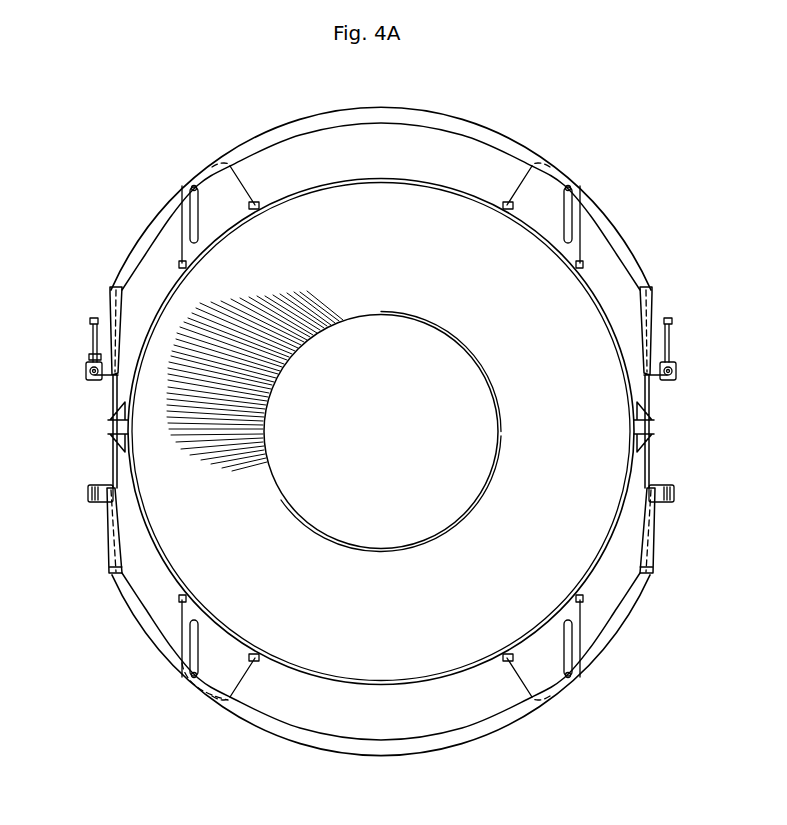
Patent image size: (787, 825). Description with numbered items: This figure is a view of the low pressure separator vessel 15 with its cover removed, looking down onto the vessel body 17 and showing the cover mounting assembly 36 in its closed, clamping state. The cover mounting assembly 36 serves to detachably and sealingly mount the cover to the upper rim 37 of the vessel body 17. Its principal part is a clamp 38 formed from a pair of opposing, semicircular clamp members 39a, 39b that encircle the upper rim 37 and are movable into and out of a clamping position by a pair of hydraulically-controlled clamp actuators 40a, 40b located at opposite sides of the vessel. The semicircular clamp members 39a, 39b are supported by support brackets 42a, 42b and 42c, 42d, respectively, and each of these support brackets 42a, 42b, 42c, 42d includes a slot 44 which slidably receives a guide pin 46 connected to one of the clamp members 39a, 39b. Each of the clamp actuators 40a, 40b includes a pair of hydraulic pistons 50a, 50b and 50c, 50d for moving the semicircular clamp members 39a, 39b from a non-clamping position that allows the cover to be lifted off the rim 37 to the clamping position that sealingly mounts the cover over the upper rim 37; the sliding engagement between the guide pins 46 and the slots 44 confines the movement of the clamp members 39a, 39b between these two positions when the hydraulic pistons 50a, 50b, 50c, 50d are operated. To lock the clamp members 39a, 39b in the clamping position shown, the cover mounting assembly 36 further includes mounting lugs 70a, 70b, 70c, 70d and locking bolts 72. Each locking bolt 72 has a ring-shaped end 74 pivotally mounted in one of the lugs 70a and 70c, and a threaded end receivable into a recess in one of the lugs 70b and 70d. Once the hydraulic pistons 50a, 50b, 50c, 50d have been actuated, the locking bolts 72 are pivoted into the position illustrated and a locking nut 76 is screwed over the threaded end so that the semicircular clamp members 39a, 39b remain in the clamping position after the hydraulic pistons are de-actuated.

The mounting ring assembly 15 is at (237, 104).
The vessel body 17 is at (468, 275).
The cover mounting assembly 36 is at (236, 733).
The upper rim 37 is at (363, 660).
The clamp 38 is at (530, 100).
The semicircular clamp member 39a is at (354, 745).
The semicircular clamp member 39b is at (410, 120).
The clamp actuator 40a is at (108, 292).
The clamp actuator 40b is at (656, 292).
The support bracket 42a is at (217, 663).
The support bracket 42b is at (548, 680).
The support bracket 42c is at (218, 190).
The support bracket 42d is at (543, 190).
The slot 44 is at (190, 207).
The guide pin 46 is at (183, 687).
The hydraulic piston 50a is at (110, 302).
The hydraulic piston 50b is at (116, 530).
The hydraulic piston 50c is at (640, 328).
The hydraulic piston 50d is at (632, 532).
The mounting lug 70a is at (86, 374).
The mounting lug 70b is at (88, 493).
The mounting lug 70c is at (676, 374).
The mounting lug 70d is at (674, 493).
The locking bolt 72 is at (672, 342).
The ring-shaped end 74 is at (92, 357).
The locking nut 76 is at (93, 325).